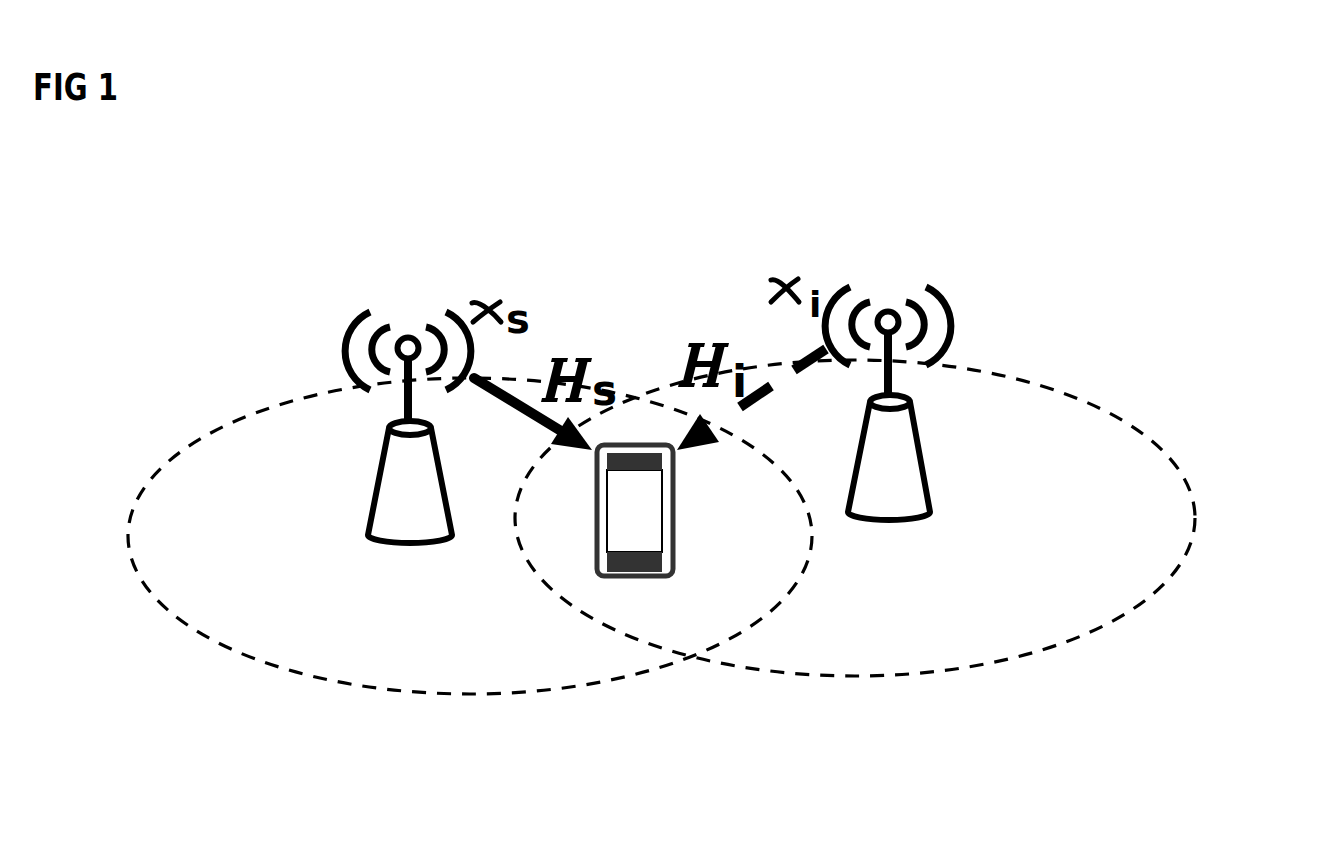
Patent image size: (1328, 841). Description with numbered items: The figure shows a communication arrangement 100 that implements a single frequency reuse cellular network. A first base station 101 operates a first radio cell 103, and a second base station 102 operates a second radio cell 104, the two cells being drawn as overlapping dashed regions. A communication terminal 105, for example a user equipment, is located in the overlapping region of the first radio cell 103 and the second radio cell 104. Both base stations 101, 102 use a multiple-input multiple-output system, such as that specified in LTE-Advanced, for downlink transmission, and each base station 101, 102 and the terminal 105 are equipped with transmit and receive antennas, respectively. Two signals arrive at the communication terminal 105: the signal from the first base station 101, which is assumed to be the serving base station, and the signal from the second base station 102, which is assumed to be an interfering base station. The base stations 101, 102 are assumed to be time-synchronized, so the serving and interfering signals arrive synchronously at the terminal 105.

The communication arrangement 100 is at (1242, 140).
The first base station 101 is at (375, 462).
The second base station 102 is at (922, 442).
The first radio cell 103 is at (227, 422).
The second radio cell 104 is at (1055, 392).
The communication terminal 105 is at (675, 498).